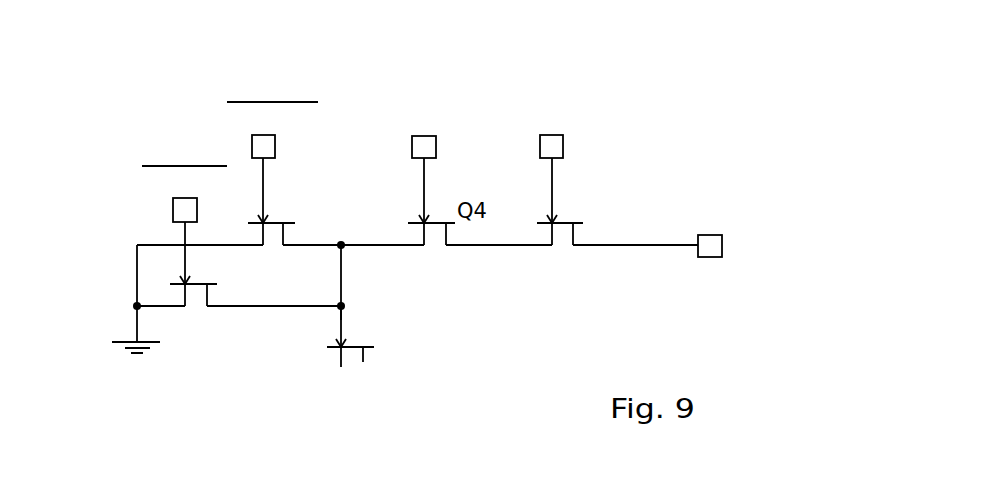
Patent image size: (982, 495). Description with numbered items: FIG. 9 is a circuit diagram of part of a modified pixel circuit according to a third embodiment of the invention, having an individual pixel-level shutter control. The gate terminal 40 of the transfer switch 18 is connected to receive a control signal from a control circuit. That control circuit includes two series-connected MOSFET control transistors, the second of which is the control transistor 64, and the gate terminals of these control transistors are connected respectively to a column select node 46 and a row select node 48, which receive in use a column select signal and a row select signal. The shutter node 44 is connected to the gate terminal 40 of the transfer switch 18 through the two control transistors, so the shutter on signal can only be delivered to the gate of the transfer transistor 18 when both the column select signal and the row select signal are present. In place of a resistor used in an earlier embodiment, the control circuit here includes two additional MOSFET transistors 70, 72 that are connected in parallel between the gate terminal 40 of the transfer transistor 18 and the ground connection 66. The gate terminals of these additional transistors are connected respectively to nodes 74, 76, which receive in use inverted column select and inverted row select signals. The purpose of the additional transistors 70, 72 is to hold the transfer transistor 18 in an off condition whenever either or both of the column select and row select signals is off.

The transfer switch 18 is at (363, 362).
The gate terminal 40 is at (342, 318).
The shutter node 44 is at (708, 235).
The column select node 46 is at (420, 143).
The row select node 48 is at (548, 143).
The control transistor 64 is at (568, 223).
The ground connection 66 is at (122, 340).
The additional MOSFET transistor 70 is at (205, 287).
The additional MOSFET transistor 72 is at (278, 223).
The node 74 is at (173, 210).
The node 76 is at (257, 150).